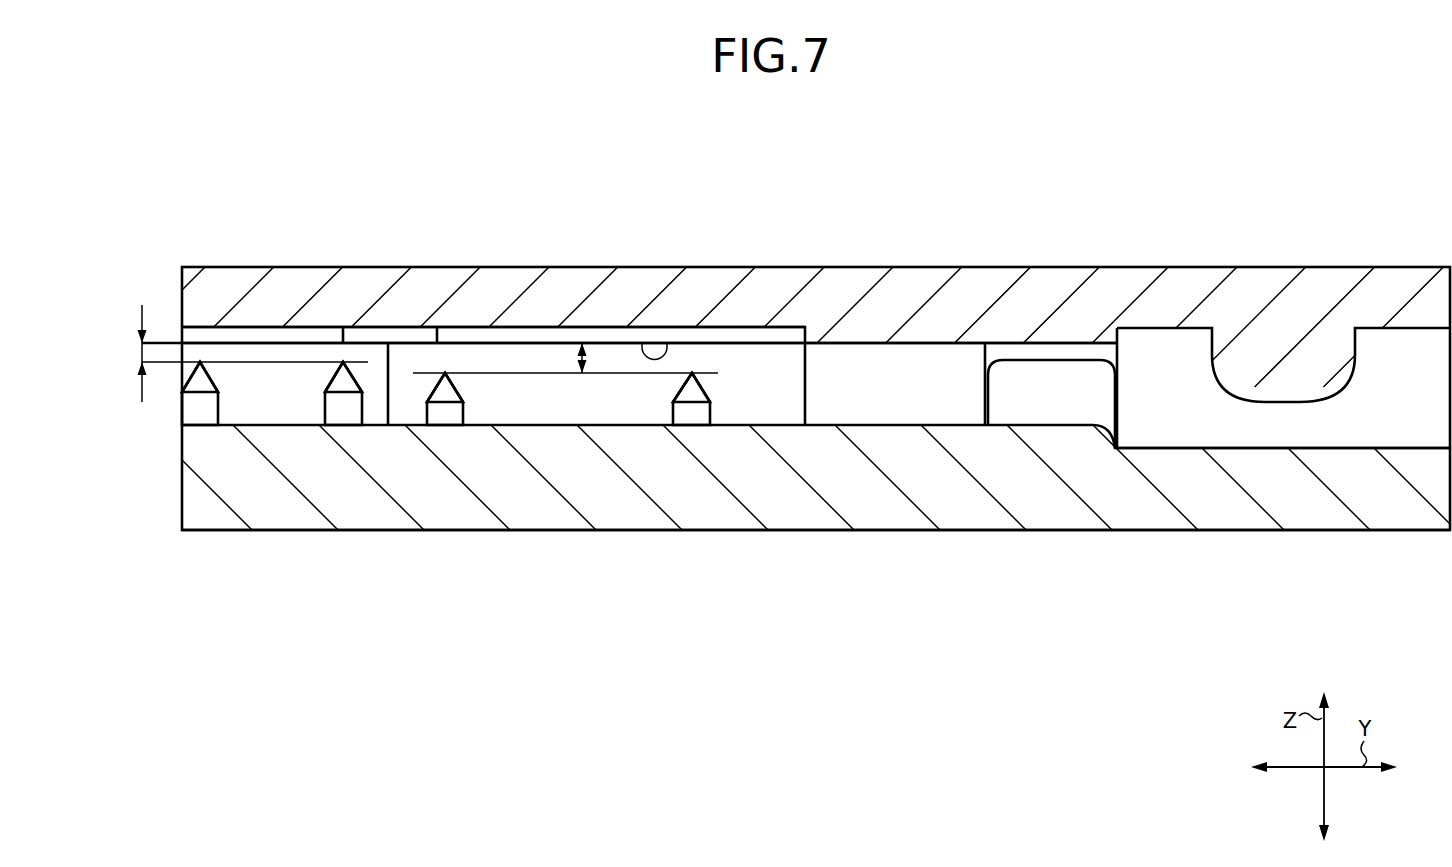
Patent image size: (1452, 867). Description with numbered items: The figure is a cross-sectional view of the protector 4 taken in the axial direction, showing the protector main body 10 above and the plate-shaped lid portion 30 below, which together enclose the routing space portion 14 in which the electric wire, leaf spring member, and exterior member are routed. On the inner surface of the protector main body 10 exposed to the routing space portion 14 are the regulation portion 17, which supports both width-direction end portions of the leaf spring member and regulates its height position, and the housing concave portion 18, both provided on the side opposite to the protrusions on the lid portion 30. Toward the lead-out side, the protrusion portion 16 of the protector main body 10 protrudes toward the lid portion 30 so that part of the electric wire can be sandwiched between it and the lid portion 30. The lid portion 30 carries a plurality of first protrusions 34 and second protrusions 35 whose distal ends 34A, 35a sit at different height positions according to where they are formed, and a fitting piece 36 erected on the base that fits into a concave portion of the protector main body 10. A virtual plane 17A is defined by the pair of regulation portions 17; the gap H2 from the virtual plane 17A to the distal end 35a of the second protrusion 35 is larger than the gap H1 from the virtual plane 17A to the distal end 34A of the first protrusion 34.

The protector 4 is at (1341, 195).
The protector main body 10 is at (930, 277).
The routing space portion 14 is at (898, 408).
The protrusion portion 16 is at (1327, 377).
The regulation portion 17 is at (670, 343).
The virtual plane 17A is at (654, 351).
The housing concave portion 18 is at (505, 327).
The lid portion 30 is at (822, 512).
The first protrusion 34 is at (200, 412).
The distal end of the first protrusion 34A is at (192, 366).
The second protrusion 35 is at (447, 412).
The distal end of the second protrusion 35a is at (443, 374).
The fitting piece 36 is at (1048, 400).
The gap H1 is at (140, 354).
The gap H2 is at (582, 343).